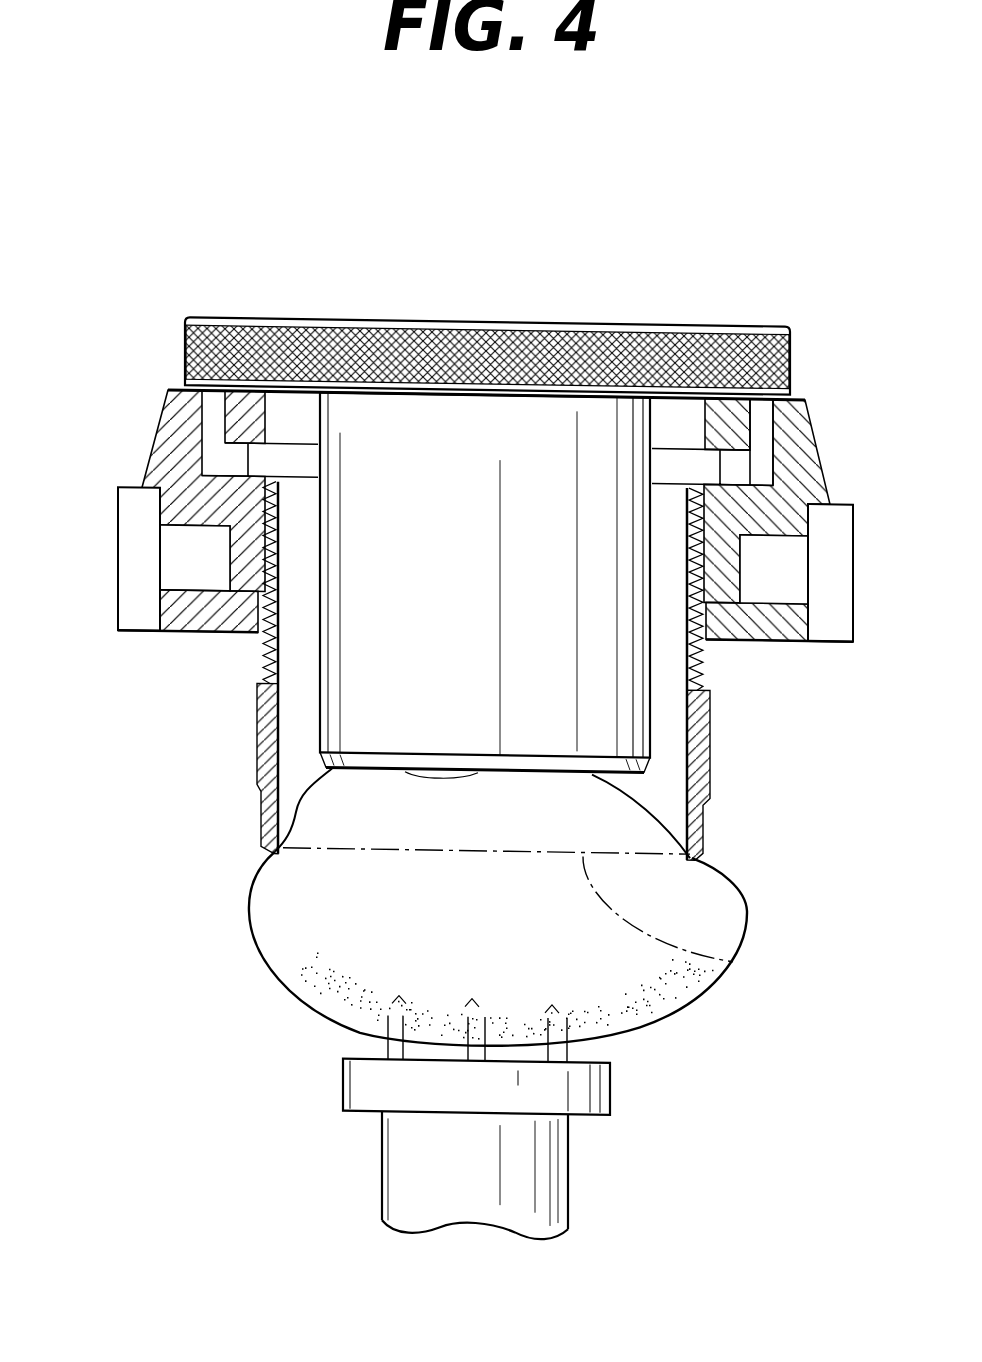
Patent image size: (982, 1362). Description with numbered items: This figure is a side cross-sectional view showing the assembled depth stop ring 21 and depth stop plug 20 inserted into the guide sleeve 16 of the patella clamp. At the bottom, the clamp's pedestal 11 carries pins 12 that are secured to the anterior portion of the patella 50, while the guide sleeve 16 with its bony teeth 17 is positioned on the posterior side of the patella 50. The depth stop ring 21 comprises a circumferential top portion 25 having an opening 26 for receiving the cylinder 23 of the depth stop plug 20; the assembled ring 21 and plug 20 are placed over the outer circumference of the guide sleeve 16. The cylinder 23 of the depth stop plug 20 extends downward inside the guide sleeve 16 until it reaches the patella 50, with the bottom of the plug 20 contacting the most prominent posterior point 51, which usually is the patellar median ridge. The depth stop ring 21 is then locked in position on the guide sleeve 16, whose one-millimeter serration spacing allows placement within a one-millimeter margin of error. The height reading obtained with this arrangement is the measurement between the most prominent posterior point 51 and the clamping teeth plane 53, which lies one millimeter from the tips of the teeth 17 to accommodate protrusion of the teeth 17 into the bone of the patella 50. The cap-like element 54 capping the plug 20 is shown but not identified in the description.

The cap 54 is at (332, 320).
The depth stop plug 20 is at (770, 325).
The circumferential top portion 25 is at (172, 393).
The opening 26 is at (287, 427).
The depth stop ring 21 is at (162, 636).
The cylinder 23 is at (533, 420).
The most prominent posterior point 51 is at (363, 768).
The guide sleeve 16 is at (710, 718).
The bony teeth 17 is at (690, 872).
The patella 50 is at (317, 948).
The clamping teeth plane 53 is at (733, 958).
The pins 12 is at (612, 1043).
The pedestal 11 is at (388, 1198).